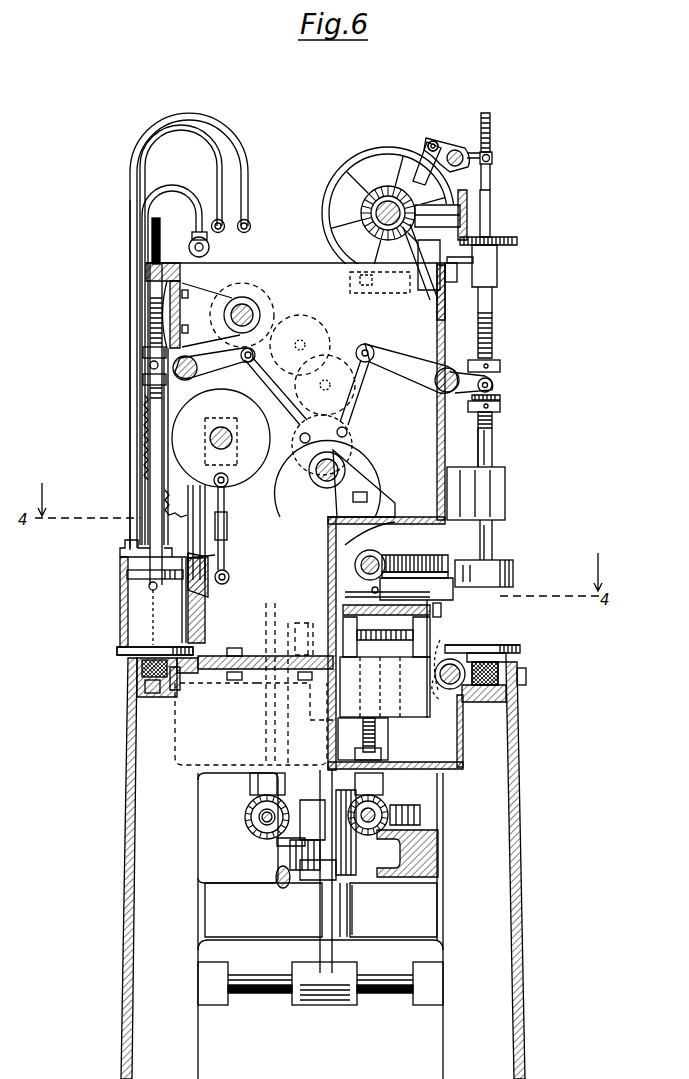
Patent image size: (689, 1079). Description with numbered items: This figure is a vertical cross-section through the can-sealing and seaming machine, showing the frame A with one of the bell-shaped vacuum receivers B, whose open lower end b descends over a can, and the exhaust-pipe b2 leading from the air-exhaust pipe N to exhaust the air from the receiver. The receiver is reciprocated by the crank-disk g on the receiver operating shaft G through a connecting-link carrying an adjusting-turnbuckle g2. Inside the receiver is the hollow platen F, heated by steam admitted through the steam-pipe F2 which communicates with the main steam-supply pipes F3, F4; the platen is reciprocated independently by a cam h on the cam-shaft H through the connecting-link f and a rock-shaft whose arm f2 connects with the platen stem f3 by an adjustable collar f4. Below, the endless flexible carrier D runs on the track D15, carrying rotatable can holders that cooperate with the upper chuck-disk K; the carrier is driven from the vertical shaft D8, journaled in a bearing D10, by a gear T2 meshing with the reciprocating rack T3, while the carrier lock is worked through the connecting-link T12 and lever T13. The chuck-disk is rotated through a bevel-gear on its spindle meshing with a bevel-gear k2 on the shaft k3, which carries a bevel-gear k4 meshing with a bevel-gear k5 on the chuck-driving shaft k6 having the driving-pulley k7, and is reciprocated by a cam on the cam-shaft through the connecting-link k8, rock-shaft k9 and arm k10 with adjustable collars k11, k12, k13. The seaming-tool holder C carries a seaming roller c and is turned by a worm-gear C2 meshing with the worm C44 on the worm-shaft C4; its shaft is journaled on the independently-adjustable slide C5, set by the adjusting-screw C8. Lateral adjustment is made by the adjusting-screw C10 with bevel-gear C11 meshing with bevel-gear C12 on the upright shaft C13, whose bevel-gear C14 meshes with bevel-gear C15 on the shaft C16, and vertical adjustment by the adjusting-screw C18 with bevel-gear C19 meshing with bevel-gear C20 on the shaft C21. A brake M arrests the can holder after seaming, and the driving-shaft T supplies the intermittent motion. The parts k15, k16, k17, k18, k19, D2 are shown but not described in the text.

The frame A is at (543, 922).
The vacuum chamber or receiver B is at (120, 614).
The open lower end b is at (153, 635).
The exhaust-pipe b2 is at (150, 202).
The seaming-tool holder C is at (442, 600).
The worm-gear C2 is at (458, 558).
The worm-shaft C4 is at (347, 573).
The independently-adjustable slide C5 is at (355, 549).
The seaming tool or roller c is at (372, 588).
The adjusting-screw C8 is at (444, 612).
The adjusting-screw C10 is at (408, 650).
The bevel-gear C11 is at (333, 608).
The bevel-gear C12 is at (258, 657).
The upright shaft C13 is at (268, 730).
The bevel-gear C14 is at (248, 803).
The bevel-gear C15 is at (250, 823).
The shaft C16 is at (268, 825).
The adjusting-screw C18 is at (376, 739).
The bevel-gear C19 is at (385, 800).
The bevel-gear C20 is at (390, 806).
The shaft C21 is at (412, 832).
The worm C44 is at (362, 550).
The endless flexible carrier D is at (133, 680).
The plate D2 is at (515, 645).
The vertical shaft D8 is at (317, 780).
The bearing D10 is at (350, 912).
The track or guide D15 is at (165, 697).
The hollow platen F is at (137, 577).
The steam-pipe F2 is at (165, 120).
The main steam-supply pipe F3 is at (224, 223).
The main steam-supply pipe F4 is at (250, 226).
The connecting-link f is at (232, 363).
The arm f2 is at (149, 365).
The stem f3 is at (150, 432).
The adjustable collar f4 is at (149, 380).
The receiver operating shaft G is at (232, 435).
The crank-disk g is at (233, 516).
The adjusting-turnbuckle g2 is at (233, 527).
The cam-shaft H is at (345, 470).
The cam h is at (340, 455).
The upper chuck-disk K is at (513, 572).
The bevel-gear k2 is at (470, 206).
The shaft k3 is at (422, 176).
The bevel-gear k4 is at (418, 178).
The bevel-gear k5 is at (385, 186).
The chuck-driving shaft k6 is at (372, 210).
The driving-pulley k7 is at (356, 175).
The connecting-link k8 is at (406, 372).
The rock-shaft k9 is at (440, 370).
The arm k10 is at (465, 380).
The adjustable collar k11 is at (500, 387).
The adjustable collar k12 is at (500, 361).
The adjustable collar k13 is at (500, 407).
The screw rod k15 is at (491, 122).
The arm k16 is at (471, 158).
The pivot k17 is at (452, 115).
The pin k18 is at (492, 158).
The link k19 is at (430, 145).
The brake M is at (449, 659).
The air-exhaust pipe N is at (193, 241).
The driving-shaft T is at (262, 315).
The gear T2 is at (310, 857).
The reciprocating rack T3 is at (405, 857).
The connecting-link T12 is at (275, 884).
The lever T13 is at (327, 950).